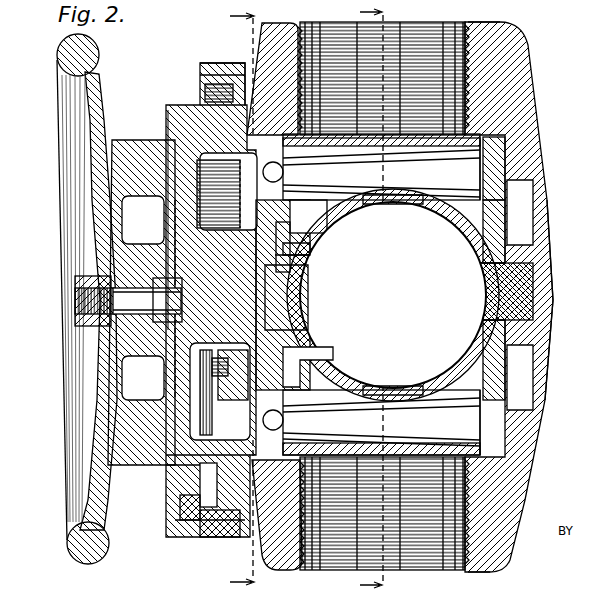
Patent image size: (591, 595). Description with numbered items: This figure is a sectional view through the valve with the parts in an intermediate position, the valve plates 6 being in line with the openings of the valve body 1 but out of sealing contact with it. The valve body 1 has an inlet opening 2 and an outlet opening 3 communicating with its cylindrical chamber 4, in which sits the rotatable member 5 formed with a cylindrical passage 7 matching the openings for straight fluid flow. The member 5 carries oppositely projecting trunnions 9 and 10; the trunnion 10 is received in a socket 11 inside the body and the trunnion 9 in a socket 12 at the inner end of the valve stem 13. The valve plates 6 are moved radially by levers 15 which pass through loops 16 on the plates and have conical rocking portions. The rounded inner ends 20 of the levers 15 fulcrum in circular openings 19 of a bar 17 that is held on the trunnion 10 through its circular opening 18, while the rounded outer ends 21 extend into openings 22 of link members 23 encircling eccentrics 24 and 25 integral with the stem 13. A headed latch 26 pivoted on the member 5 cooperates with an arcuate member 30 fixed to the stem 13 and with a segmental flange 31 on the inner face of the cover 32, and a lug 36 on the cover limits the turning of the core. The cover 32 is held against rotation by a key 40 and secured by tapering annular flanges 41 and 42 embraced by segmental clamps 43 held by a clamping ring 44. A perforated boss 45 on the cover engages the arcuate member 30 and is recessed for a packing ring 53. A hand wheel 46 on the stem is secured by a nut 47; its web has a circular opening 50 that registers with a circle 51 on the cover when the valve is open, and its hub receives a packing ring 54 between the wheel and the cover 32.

The valve body 1 is at (512, 66).
The opening 2 is at (468, 22).
The opening 3 is at (470, 570).
The cylindrical chamber 4 is at (520, 110).
The rotatable member 5 is at (480, 342).
The valve plates 6 is at (420, 442).
The passage 7 is at (332, 333).
The trunnion 9 is at (276, 322).
The trunnion 10 is at (552, 250).
The socket 11 is at (532, 316).
The socket 12 is at (292, 288).
The valve stem 13 is at (166, 242).
The levers 15 is at (428, 202).
The loop 16 is at (352, 252).
The bar 17 is at (502, 222).
The circular opening 18 is at (470, 256).
The circular openings 19 is at (500, 196).
The ends 20 is at (496, 165).
The ends 21 is at (288, 174).
The openings 22 is at (253, 322).
The link members 23 is at (282, 230).
The eccentric 24 is at (233, 371).
The eccentric 25 is at (302, 262).
The headed latch 26 is at (262, 372).
The arcuate member 30 is at (250, 238).
The segmental flange 31 is at (182, 432).
The cover 32 is at (186, 458).
The lug 36 is at (274, 79).
The key 40 is at (187, 97).
The tapering annular flange 41 is at (180, 505).
The tapering annular flange 42 is at (208, 537).
The segmental clamps 43 is at (190, 64).
The clamping ring 44 is at (205, 537).
The perforated boss 45 is at (188, 220).
The hand wheel 46 is at (66, 462).
The nut 47 is at (86, 324).
The opening 50 is at (80, 270).
The circle 51 is at (176, 453).
The packing ring 53 is at (220, 391).
The packing ring 54 is at (143, 378).